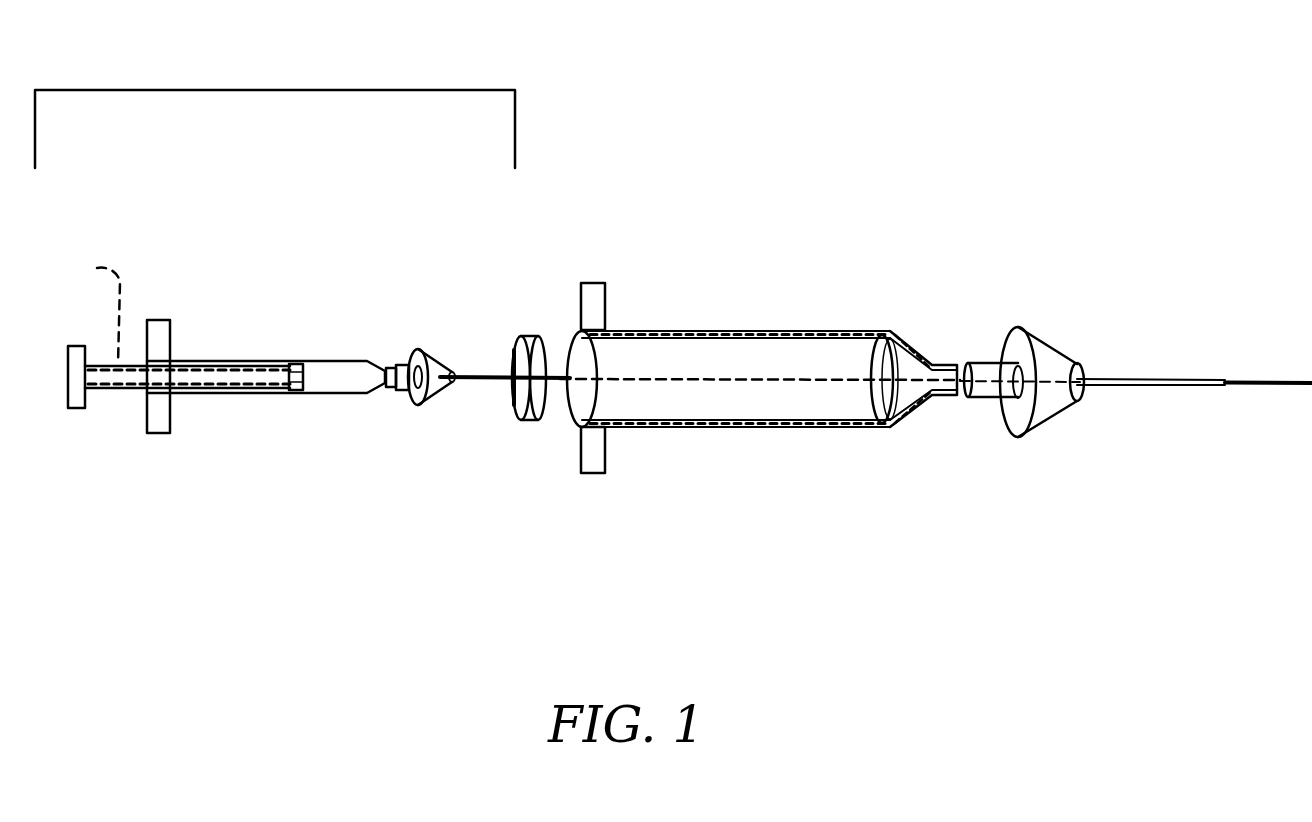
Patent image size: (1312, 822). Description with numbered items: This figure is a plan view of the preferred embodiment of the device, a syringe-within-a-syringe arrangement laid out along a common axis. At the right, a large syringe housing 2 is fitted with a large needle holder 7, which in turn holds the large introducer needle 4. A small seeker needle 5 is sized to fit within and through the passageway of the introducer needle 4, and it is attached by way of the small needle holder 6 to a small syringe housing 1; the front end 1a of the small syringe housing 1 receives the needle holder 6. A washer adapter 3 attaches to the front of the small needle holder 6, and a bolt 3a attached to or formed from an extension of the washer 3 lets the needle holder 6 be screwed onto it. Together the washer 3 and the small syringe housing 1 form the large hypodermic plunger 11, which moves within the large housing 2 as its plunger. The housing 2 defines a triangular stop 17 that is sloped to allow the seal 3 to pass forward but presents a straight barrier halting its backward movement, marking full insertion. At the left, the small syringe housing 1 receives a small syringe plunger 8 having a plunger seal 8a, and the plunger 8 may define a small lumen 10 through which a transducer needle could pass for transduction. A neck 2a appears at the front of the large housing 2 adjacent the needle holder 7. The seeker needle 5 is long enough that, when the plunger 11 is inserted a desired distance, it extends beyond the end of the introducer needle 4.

The small syringe housing 1 is at (314, 361).
The front end of the small syringe housing 1a is at (388, 387).
The large syringe housing 2 is at (790, 328).
The container neck 2a is at (920, 388).
The washer adapter 3 is at (530, 352).
The bolt 3a is at (506, 408).
The introducer needle 4 is at (1123, 375).
The seeker needle 5 is at (465, 370).
The small needle holder 6 is at (415, 398).
The large needle holder 7 is at (1014, 327).
The small syringe plunger 8 is at (118, 388).
The plunger seal 8a is at (293, 392).
The small plunger lumen 10 is at (82, 307).
The large hypodermic plunger 11 is at (287, 90).
The triangular stop 17 is at (663, 340).